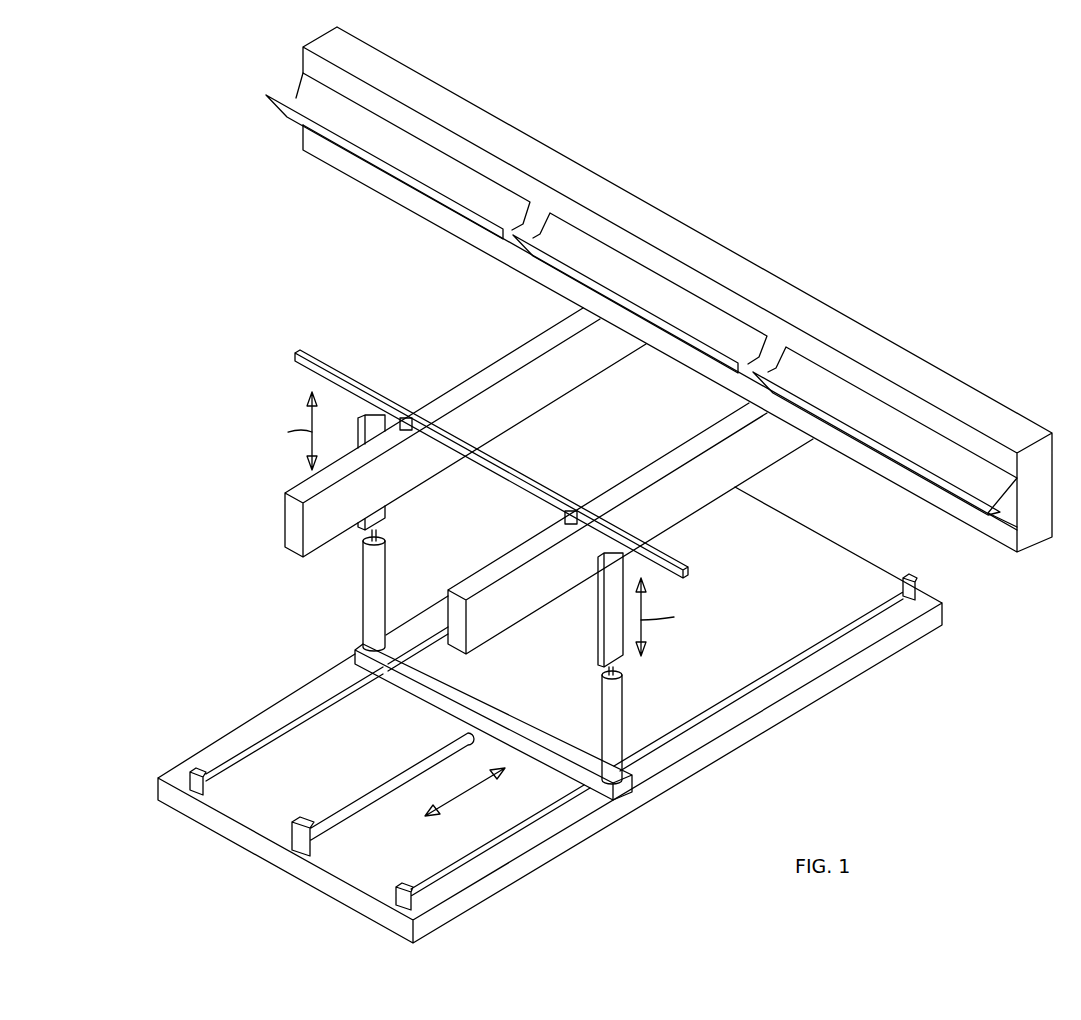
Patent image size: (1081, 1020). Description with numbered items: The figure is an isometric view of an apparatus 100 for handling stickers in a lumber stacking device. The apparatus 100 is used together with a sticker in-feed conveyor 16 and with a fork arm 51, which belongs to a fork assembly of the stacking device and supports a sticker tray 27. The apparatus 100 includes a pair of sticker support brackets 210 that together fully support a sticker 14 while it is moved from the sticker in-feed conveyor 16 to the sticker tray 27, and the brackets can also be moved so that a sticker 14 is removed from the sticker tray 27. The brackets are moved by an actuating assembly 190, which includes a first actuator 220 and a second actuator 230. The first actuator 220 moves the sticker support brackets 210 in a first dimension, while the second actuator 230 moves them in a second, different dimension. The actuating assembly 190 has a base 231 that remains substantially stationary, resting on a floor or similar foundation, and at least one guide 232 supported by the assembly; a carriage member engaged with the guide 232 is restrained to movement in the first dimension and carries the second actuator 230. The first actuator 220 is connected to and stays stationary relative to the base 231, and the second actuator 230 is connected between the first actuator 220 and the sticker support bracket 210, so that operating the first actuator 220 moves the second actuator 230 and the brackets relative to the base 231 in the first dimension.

The apparatus 100 is at (605, 485).
The fork arm 51 is at (640, 307).
The sticker tray 27 is at (303, 90).
The sticker in-feed conveyor 16 is at (503, 366).
The sticker 14 is at (510, 470).
The actuating assembly 190 is at (545, 679).
The base 231 is at (828, 560).
The guide 232 is at (432, 633).
The first actuator 220 is at (390, 770).
The second actuator 230 is at (373, 597).
The sticker support bracket 210 is at (375, 430).